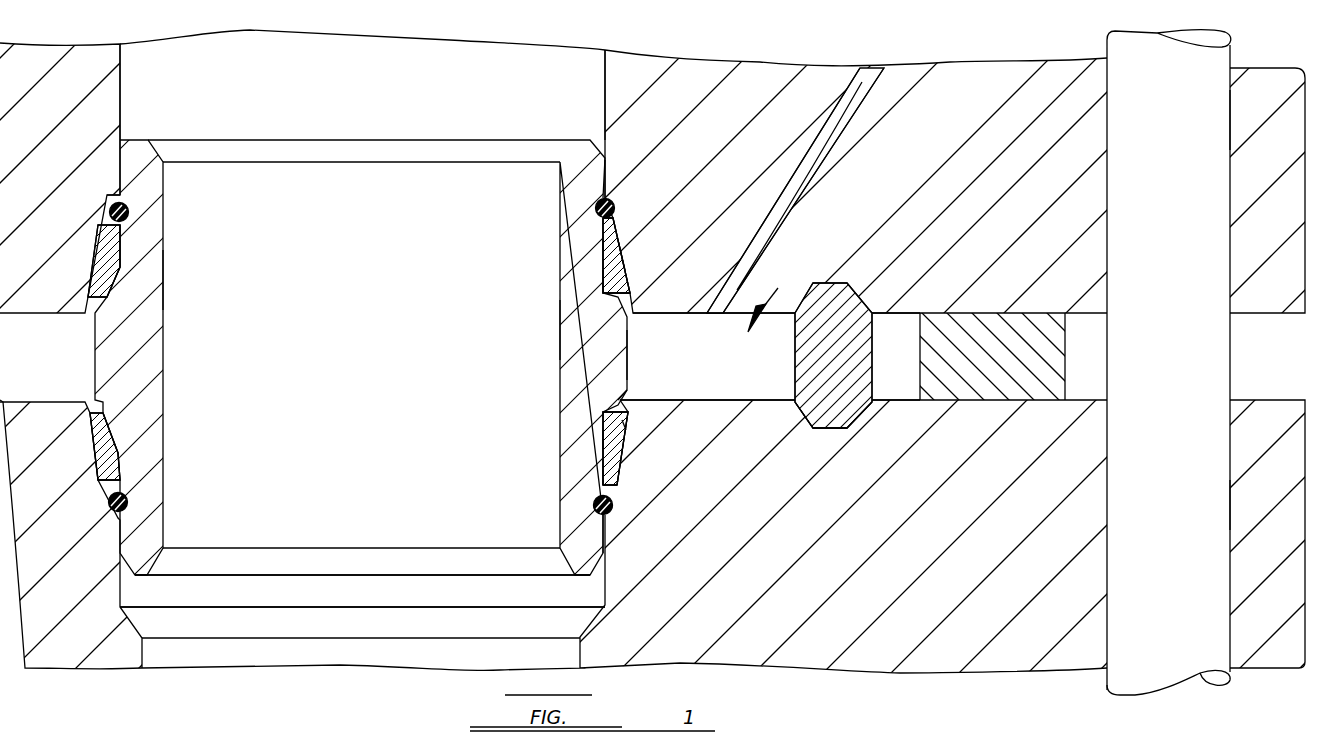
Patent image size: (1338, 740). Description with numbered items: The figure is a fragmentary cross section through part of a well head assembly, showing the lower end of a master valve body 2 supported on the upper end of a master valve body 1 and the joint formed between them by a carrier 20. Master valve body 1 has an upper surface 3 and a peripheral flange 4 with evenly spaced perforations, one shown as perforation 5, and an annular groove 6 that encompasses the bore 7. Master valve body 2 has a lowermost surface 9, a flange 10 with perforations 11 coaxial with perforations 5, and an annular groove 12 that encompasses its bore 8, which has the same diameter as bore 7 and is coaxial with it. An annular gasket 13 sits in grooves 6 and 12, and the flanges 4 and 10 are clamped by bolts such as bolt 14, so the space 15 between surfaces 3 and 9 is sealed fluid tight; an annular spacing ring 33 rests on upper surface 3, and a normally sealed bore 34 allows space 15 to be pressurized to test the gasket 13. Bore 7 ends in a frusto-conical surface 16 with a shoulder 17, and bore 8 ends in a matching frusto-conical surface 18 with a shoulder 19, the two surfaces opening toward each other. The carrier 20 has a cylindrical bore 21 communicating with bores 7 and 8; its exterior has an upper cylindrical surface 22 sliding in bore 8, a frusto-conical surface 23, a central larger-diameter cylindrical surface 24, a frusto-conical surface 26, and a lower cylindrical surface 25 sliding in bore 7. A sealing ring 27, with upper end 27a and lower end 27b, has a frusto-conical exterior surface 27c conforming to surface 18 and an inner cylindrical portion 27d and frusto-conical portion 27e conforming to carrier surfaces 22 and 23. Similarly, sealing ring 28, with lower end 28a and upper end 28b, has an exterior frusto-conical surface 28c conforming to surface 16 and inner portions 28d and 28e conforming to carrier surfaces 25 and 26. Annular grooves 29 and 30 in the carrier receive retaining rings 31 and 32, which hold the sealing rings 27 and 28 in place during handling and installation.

The master valve body 1 is at (975, 668).
The master valve body 2 is at (944, 80).
The upper surface 3 is at (717, 397).
The peripheral flange 4 is at (1250, 412).
The perforation 5 is at (1230, 510).
The annular groove 6 is at (802, 412).
The bore 7 is at (603, 588).
The bore 8 is at (605, 88).
The lowermost surface 9 is at (668, 315).
The peripheral flange 10 is at (1295, 222).
The perforations 11 is at (1225, 122).
The annular groove 12 is at (862, 300).
The annular gasket 13 is at (873, 369).
The bolt 14 is at (1217, 368).
The space 15 is at (778, 296).
The frusto-conical surface 16 is at (612, 505).
The shoulder 17 is at (605, 547).
The frusto-conical surface 18 is at (614, 212).
The shoulder 19 is at (605, 196).
The carrier 20 is at (145, 352).
The cylindrical bore 21 is at (165, 284).
The cylindrical exterior surface 22 is at (128, 203).
The frusto-conical surface 23 is at (562, 330).
The exterior surface 24 is at (628, 355).
The cylindrical exterior surface 25 is at (128, 508).
The frusto-conical surface 26 is at (628, 386).
The sealing ring 27 is at (620, 268).
The upper end 27a is at (603, 222).
The lower end 27b is at (626, 297).
The exterior surface 27c is at (632, 276).
The first cylindrical portion 27d is at (603, 245).
The second frusto-conical portion 27e is at (604, 282).
The sealing ring 28 is at (622, 445).
The lower end 28a is at (613, 494).
The upper end 28b is at (628, 398).
The exterior frusto-conical surface 28c is at (626, 420).
The inner surface portion 28d is at (604, 478).
The inner surface portion 28e is at (604, 434).
The annular groove 29 is at (132, 214).
The annular groove 30 is at (127, 500).
The retaining ring 31 is at (104, 208).
The retaining ring 32 is at (106, 504).
The annular spacing ring 33 is at (1038, 358).
The bore 34 is at (822, 135).